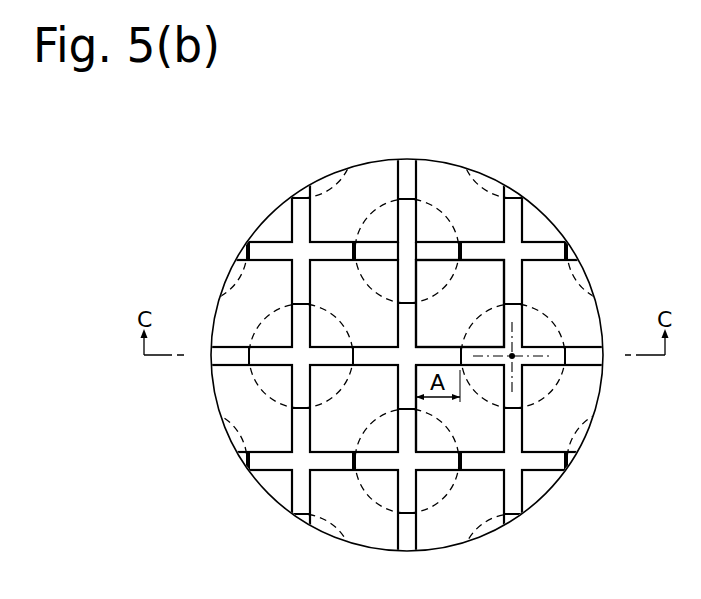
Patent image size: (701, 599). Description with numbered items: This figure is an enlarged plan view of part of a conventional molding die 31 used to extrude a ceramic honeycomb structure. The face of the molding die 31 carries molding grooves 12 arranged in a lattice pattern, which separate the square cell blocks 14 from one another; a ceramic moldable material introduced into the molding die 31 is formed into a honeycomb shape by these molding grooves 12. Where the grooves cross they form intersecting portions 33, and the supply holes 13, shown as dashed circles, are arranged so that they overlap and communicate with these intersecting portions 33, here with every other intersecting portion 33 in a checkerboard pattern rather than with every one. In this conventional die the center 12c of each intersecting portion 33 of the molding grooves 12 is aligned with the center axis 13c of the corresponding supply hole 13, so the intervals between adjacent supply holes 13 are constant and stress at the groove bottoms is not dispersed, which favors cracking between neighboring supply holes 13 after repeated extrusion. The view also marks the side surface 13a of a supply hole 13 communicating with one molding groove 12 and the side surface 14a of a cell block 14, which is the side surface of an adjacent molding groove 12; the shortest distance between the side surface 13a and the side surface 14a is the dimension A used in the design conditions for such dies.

The molding die 31 is at (243, 187).
The molding groove 12 is at (512, 483).
The center of intersecting portion 12c is at (460, 356).
The supply hole 13 is at (550, 396).
The side surface of supply hole 13a is at (460, 357).
The center axis of supply hole 13c is at (514, 358).
The cell block 14 is at (473, 287).
The side surface of cell block 14a is at (415, 430).
The intersecting portion 33 is at (405, 252).